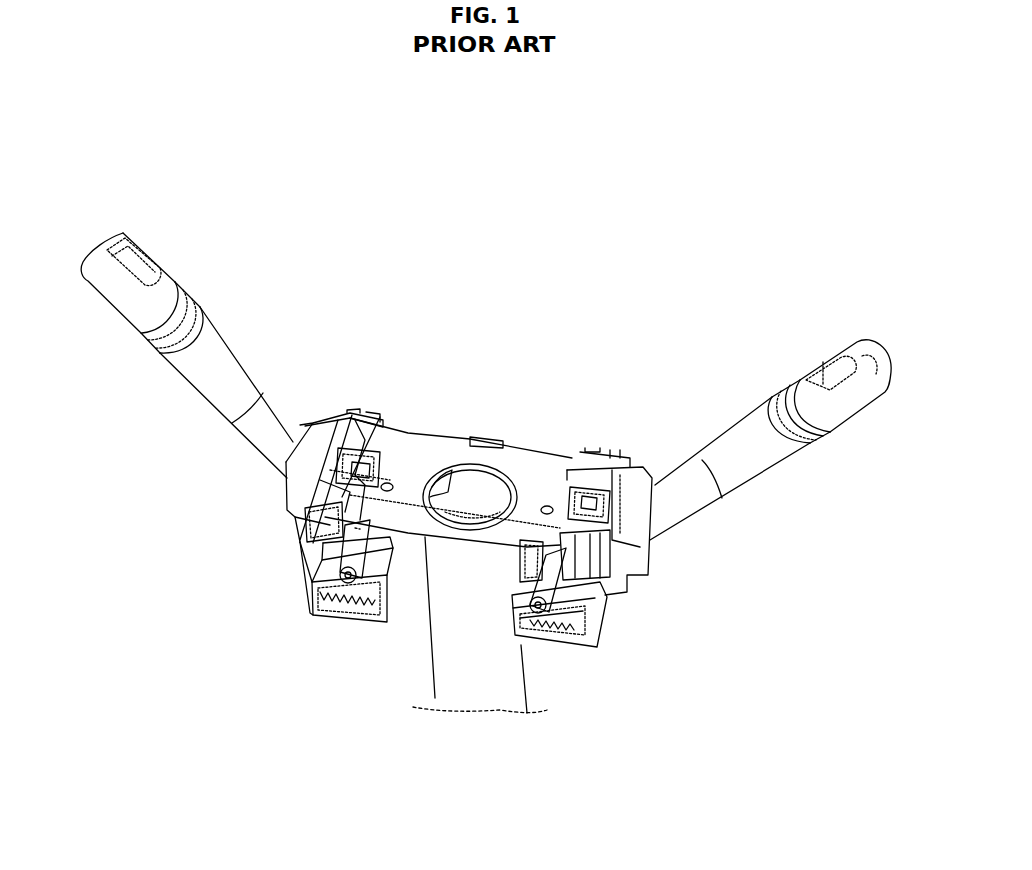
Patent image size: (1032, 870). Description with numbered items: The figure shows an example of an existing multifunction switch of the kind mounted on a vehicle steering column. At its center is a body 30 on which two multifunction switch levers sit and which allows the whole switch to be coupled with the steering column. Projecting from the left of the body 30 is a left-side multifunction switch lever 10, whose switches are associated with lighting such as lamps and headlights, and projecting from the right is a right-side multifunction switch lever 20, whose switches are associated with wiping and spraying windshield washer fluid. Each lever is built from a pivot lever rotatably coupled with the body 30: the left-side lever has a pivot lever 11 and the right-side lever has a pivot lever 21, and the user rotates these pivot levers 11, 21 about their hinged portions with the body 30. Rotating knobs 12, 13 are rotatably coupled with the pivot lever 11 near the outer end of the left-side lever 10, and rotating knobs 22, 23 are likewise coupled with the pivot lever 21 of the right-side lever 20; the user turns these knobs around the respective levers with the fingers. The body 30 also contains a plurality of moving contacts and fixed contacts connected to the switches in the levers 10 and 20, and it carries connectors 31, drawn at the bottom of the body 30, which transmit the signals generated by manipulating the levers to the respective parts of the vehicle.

The left-side multifunction switch lever 10 is at (218, 270).
The pivot lever 11 is at (227, 363).
The rotating knob 12 is at (160, 338).
The rotating knob 13 is at (137, 257).
The right-side multifunction switch lever 20 is at (751, 353).
The pivot lever 21 is at (737, 447).
The rotating knob 22 is at (807, 443).
The rotating knob 23 is at (835, 363).
The body 30 is at (433, 433).
The connectors 31 is at (352, 610).